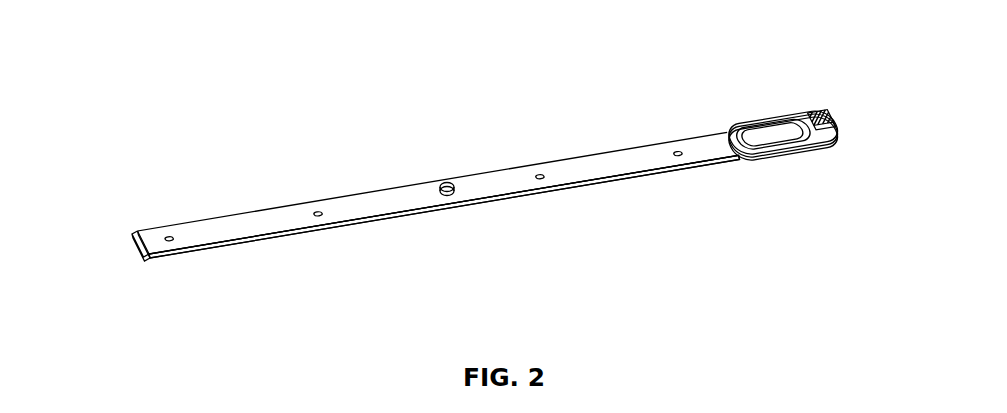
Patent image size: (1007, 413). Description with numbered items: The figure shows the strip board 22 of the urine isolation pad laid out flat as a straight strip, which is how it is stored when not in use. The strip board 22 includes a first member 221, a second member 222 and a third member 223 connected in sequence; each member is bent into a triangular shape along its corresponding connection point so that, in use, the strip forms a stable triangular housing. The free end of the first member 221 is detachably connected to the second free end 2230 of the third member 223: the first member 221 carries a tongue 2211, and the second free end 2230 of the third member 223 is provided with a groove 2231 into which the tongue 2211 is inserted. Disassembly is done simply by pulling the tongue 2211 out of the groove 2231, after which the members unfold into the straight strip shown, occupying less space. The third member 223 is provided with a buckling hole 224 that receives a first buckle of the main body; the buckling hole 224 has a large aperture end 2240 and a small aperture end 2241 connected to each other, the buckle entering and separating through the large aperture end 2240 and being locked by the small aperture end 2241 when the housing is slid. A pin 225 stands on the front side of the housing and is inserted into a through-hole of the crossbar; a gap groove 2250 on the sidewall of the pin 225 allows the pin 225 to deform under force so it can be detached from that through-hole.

The strip board 22 is at (140, 213).
The first member 221 is at (238, 247).
The tongue 2211 is at (137, 251).
The second member 222 is at (521, 197).
The third member 223 is at (774, 152).
The second free end 2230 is at (843, 139).
The groove 2231 is at (828, 124).
The buckling hole 224 is at (686, 52).
The large aperture end 2240 is at (792, 127).
The small aperture end 2241 is at (755, 134).
The pin 225 is at (438, 183).
The gap groove 2250 is at (451, 181).